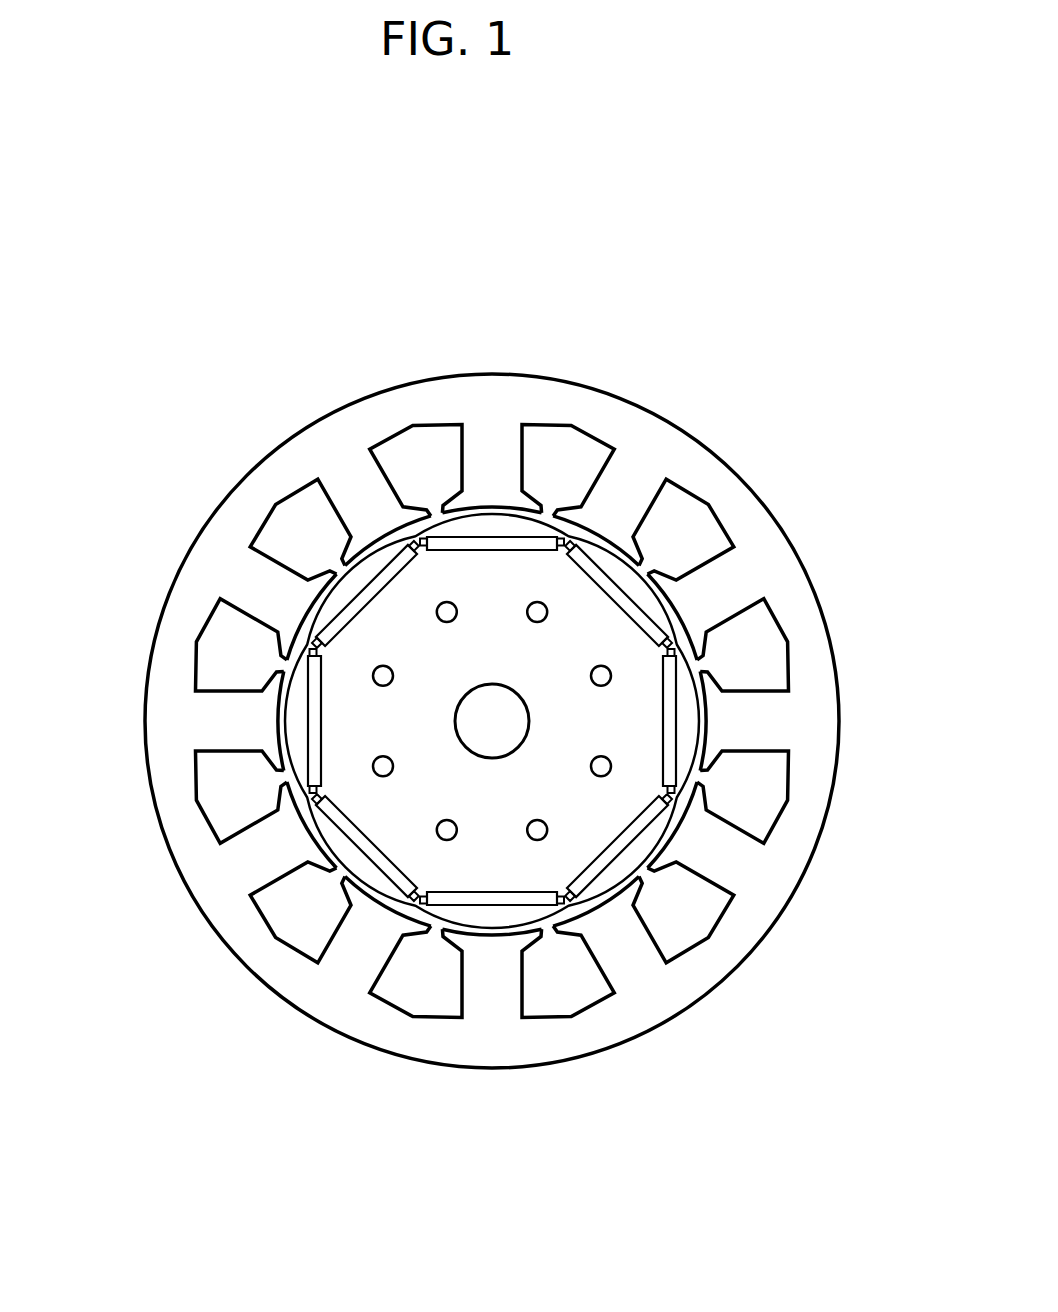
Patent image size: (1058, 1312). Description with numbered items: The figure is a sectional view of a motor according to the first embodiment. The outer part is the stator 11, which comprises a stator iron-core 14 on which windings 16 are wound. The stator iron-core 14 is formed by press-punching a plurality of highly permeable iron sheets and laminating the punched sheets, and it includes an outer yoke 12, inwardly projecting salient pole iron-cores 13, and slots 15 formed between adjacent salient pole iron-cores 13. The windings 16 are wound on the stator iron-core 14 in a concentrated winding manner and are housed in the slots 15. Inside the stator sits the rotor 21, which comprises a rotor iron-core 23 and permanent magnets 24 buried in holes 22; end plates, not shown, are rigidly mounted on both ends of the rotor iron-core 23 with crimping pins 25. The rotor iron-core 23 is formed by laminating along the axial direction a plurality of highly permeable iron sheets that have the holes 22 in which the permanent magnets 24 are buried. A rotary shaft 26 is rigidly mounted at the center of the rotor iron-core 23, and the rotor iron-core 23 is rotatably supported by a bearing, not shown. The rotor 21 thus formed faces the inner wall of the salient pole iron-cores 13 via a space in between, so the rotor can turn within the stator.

The stator 11 is at (355, 460).
The yoke 12 is at (193, 602).
The salient pole iron-cores 13 is at (252, 715).
The stator iron-core 14 is at (207, 862).
The slots 15 is at (298, 513).
The windings 16 is at (440, 452).
The rotor 21 is at (537, 772).
The holes 22 is at (640, 623).
The rotor iron-core 23 is at (546, 588).
The permanent magnets 24 is at (672, 706).
The crimping pins 25 is at (541, 840).
The rotary shaft 26 is at (492, 740).